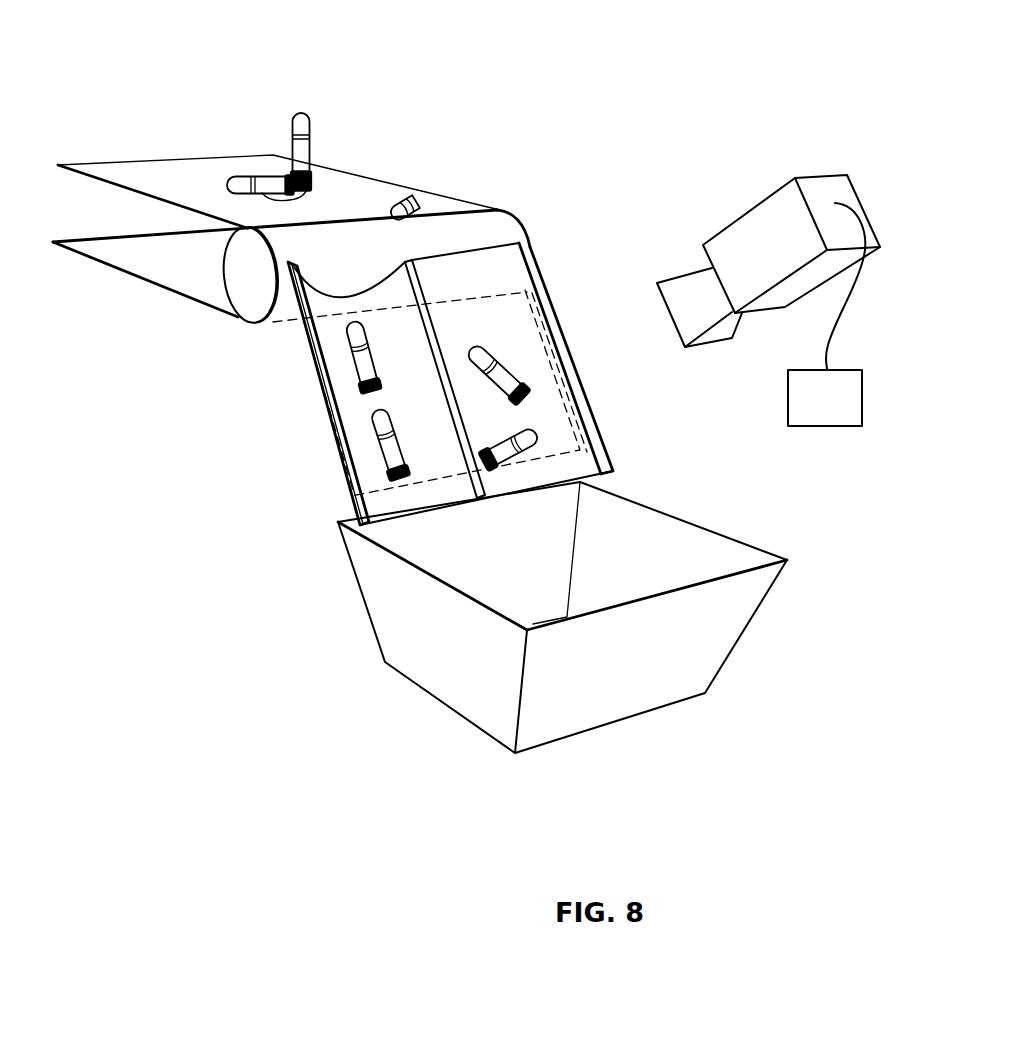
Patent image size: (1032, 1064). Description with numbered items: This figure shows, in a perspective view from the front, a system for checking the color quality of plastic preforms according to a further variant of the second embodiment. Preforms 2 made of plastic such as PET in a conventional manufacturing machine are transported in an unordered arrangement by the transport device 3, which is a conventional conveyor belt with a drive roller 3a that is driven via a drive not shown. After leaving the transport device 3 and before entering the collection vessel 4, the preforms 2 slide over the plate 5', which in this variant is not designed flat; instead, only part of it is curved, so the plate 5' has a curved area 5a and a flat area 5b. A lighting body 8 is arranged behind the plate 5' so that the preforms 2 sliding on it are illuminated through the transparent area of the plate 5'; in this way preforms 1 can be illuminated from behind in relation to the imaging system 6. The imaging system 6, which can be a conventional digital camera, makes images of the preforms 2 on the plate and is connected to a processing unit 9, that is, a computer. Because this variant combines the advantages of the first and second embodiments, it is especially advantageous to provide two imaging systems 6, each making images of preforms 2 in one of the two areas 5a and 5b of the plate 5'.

The preforms 1 is at (632, 90).
The preforms 2 is at (392, 212).
The transport device 3 is at (185, 298).
The drive roller 3a is at (258, 285).
The collection vessel 4 is at (415, 682).
The plate 5' is at (303, 393).
The curved area 5a is at (433, 507).
The flat area 5b is at (563, 472).
The imaging system 6 is at (735, 222).
The lighting body 8 is at (317, 402).
The processing unit 9 is at (833, 417).